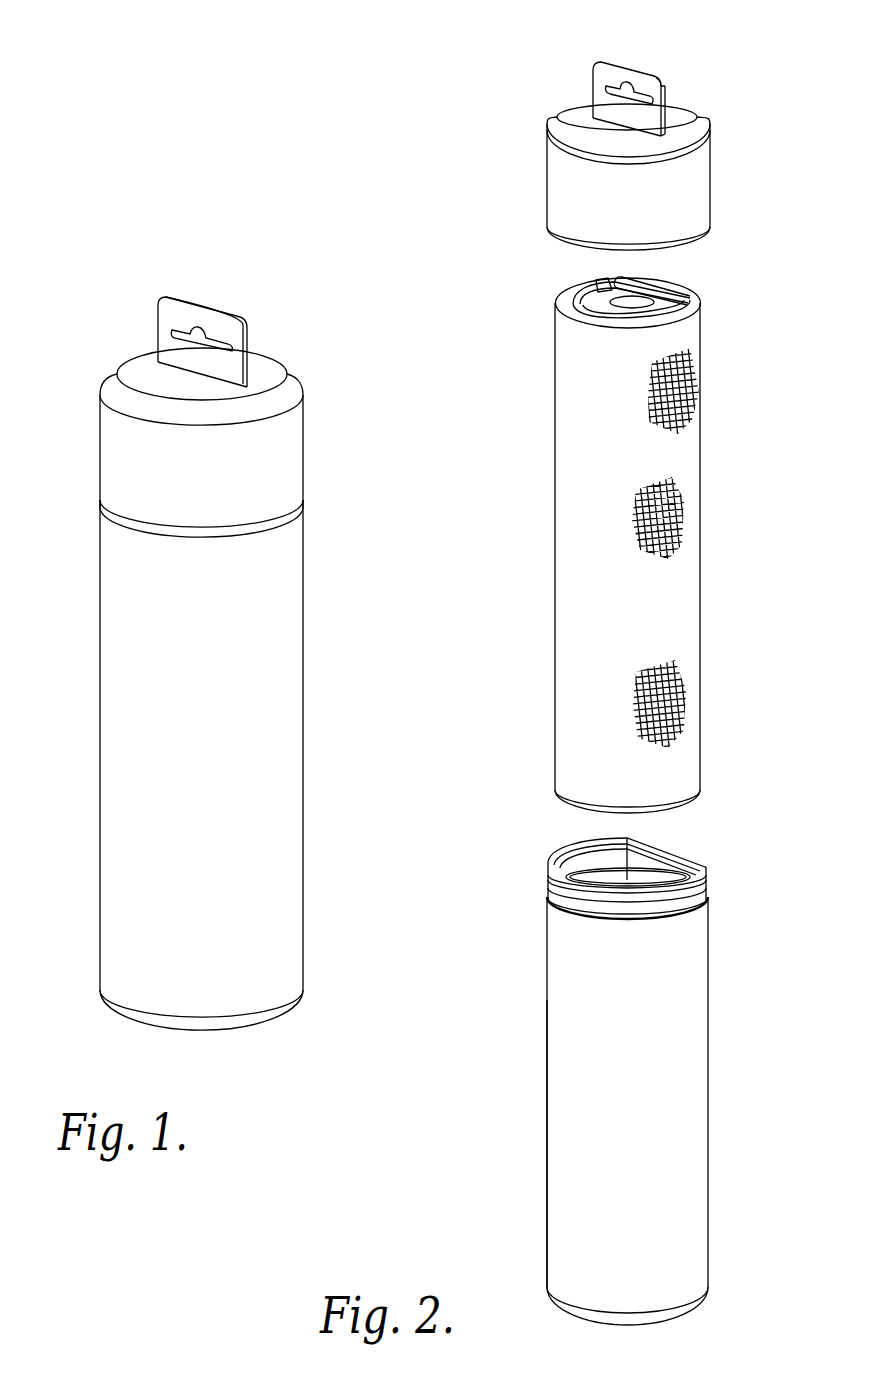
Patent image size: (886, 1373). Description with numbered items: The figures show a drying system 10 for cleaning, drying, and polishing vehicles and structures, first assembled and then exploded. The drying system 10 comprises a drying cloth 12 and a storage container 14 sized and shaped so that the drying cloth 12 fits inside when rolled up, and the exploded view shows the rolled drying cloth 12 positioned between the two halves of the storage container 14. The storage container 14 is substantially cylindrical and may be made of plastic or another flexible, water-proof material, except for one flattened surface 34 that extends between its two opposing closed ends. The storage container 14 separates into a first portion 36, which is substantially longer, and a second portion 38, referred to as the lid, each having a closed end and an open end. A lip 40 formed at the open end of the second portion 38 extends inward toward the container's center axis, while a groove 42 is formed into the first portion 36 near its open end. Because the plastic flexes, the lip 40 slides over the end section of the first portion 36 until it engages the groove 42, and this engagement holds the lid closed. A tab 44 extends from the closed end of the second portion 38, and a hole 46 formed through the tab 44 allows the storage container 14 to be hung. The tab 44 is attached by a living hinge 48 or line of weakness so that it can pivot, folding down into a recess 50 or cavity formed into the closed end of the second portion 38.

In FIG. 1, the drying system 10 is at (110, 305).
In FIG. 2, the drying system 10 is at (797, 180).
In FIG. 2, the drying cloth 12 is at (585, 480).
In FIG. 1, the storage container 14 is at (285, 615).
In FIG. 2, the storage container 14 is at (593, 1016).
In FIG. 1, the flattened surface 34 is at (312, 425).
In FIG. 2, the flattened surface 34 is at (690, 865).
In FIG. 2, the first portion 36 is at (697, 1160).
In FIG. 2, the second portion 38 is at (700, 168).
In FIG. 2, the lip 40 is at (690, 240).
In FIG. 2, the groove 42 is at (705, 905).
In FIG. 2, the tab 44 is at (605, 66).
In FIG. 2, the hole 46 is at (610, 99).
In FIG. 2, the living hinge 48 is at (623, 123).
In FIG. 2, the recess 50 is at (676, 122).